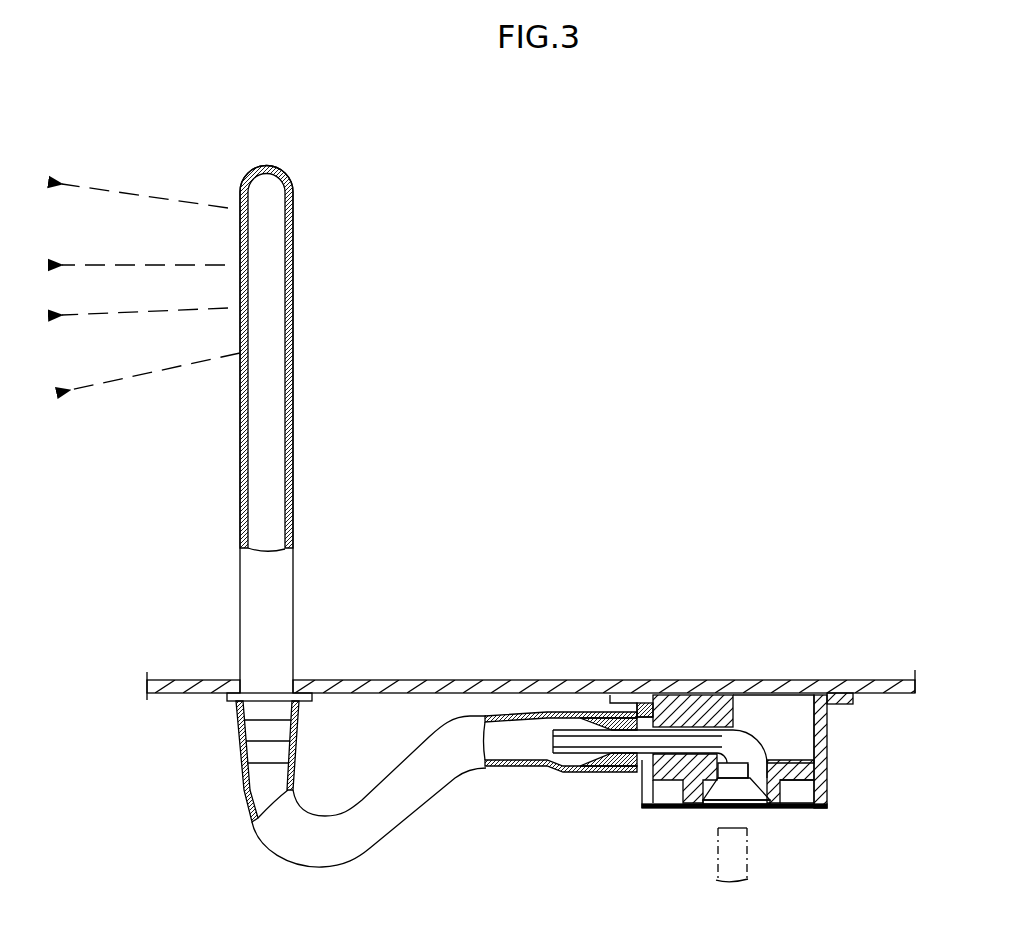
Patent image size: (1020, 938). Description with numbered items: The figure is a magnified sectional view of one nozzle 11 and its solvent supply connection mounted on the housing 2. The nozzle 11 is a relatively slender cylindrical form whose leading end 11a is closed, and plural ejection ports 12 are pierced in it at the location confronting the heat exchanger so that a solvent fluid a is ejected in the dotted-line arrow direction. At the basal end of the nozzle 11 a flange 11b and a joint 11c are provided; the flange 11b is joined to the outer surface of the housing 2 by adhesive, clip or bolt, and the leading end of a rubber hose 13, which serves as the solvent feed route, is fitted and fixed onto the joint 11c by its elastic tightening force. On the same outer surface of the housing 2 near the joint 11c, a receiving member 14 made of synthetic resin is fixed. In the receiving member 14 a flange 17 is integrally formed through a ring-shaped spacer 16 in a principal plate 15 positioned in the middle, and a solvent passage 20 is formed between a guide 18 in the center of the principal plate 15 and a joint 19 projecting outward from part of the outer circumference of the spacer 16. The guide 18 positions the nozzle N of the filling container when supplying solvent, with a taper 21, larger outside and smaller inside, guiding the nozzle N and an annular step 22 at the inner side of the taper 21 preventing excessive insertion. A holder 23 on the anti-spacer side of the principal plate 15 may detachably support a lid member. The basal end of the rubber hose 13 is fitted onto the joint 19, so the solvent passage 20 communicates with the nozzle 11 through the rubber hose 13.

The housing 2 is at (395, 680).
The nozzle 11 is at (292, 400).
The leading end 11a is at (290, 176).
The flange 11b is at (233, 702).
The joint 11c is at (273, 732).
The ejection ports 12 is at (238, 353).
The rubber hose 13 is at (382, 822).
The receiving member 14 is at (832, 767).
The principal plate 15 is at (790, 762).
The ring-shaped spacer 16 is at (833, 713).
The flange 17 is at (857, 700).
The guide 18 is at (787, 792).
The joint 19 is at (560, 772).
The solvent passage 20 is at (690, 745).
The taper 21 is at (697, 790).
The annular step 22 is at (738, 765).
The holder 23 is at (827, 800).
The solvent fluid a is at (94, 190).
The nozzle of the filling container N is at (718, 872).